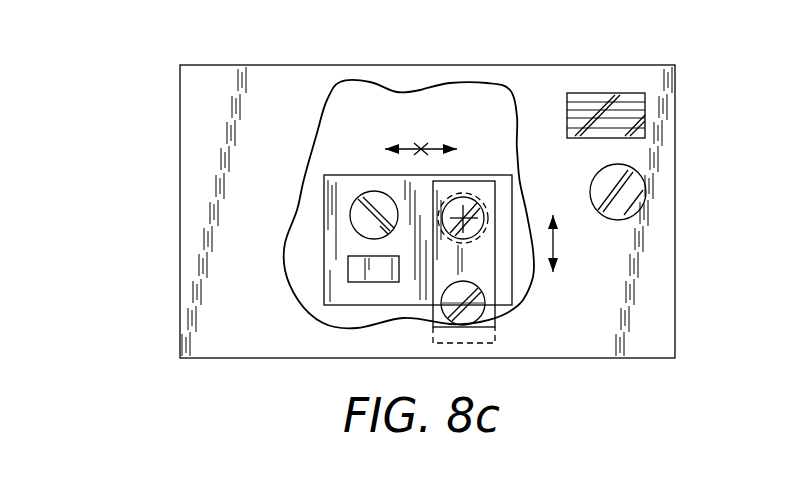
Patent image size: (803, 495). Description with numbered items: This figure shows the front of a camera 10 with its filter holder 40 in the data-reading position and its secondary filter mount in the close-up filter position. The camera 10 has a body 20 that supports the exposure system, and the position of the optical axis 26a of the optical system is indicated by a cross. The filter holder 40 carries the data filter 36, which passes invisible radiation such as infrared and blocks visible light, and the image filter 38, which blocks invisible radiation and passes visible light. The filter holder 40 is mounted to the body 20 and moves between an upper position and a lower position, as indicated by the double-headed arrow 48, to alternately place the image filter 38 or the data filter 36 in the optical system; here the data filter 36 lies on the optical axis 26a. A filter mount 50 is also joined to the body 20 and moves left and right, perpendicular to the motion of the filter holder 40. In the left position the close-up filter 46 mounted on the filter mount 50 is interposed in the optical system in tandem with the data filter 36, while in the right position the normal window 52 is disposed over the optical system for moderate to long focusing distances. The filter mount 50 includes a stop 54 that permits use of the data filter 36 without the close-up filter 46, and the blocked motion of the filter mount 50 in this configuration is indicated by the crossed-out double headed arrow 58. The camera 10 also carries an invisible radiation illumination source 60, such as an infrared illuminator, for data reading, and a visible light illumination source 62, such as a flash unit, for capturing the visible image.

The camera 10 is at (120, 118).
The body 20 is at (180, 208).
The optical axis 26a is at (463, 218).
The data filter 36 is at (482, 207).
The image filter 38 is at (473, 313).
The filter holder 40 is at (475, 195).
The close-up filter 46 is at (483, 203).
The double-headed arrow 48 is at (557, 245).
The filter mount 50 is at (380, 175).
The normal window 52 is at (350, 215).
The stop 54 is at (348, 272).
The crossed-out double headed arrow 58 is at (410, 147).
The invisible radiation illumination source 60 is at (632, 185).
The visible light illumination source 62 is at (608, 93).